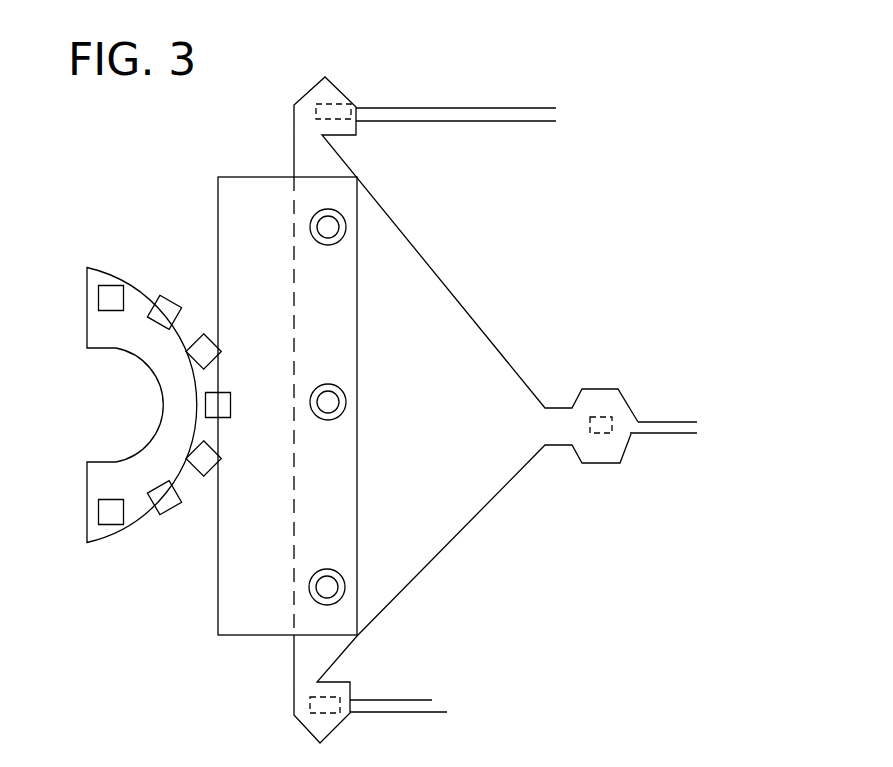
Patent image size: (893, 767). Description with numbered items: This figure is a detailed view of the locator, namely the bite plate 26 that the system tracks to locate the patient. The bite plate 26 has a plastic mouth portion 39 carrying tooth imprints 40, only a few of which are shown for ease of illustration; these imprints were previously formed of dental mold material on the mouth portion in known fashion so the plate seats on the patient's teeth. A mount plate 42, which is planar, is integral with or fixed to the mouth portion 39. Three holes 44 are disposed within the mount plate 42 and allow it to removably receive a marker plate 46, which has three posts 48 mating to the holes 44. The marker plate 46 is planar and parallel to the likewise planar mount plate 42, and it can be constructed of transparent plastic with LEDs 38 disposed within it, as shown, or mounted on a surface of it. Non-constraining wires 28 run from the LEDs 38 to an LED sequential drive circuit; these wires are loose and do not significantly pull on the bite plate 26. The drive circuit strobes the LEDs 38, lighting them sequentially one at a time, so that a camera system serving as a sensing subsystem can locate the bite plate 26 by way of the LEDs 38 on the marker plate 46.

The bite plate 26 is at (218, 613).
The wires 28 is at (497, 125).
The LEDs 38 is at (330, 100).
The mouth portion 39 is at (112, 296).
The tooth imprints 40 is at (201, 346).
The mount plate 42 is at (272, 176).
The holes 44 is at (310, 226).
The marker plate 46 is at (433, 270).
The posts 48 is at (331, 233).